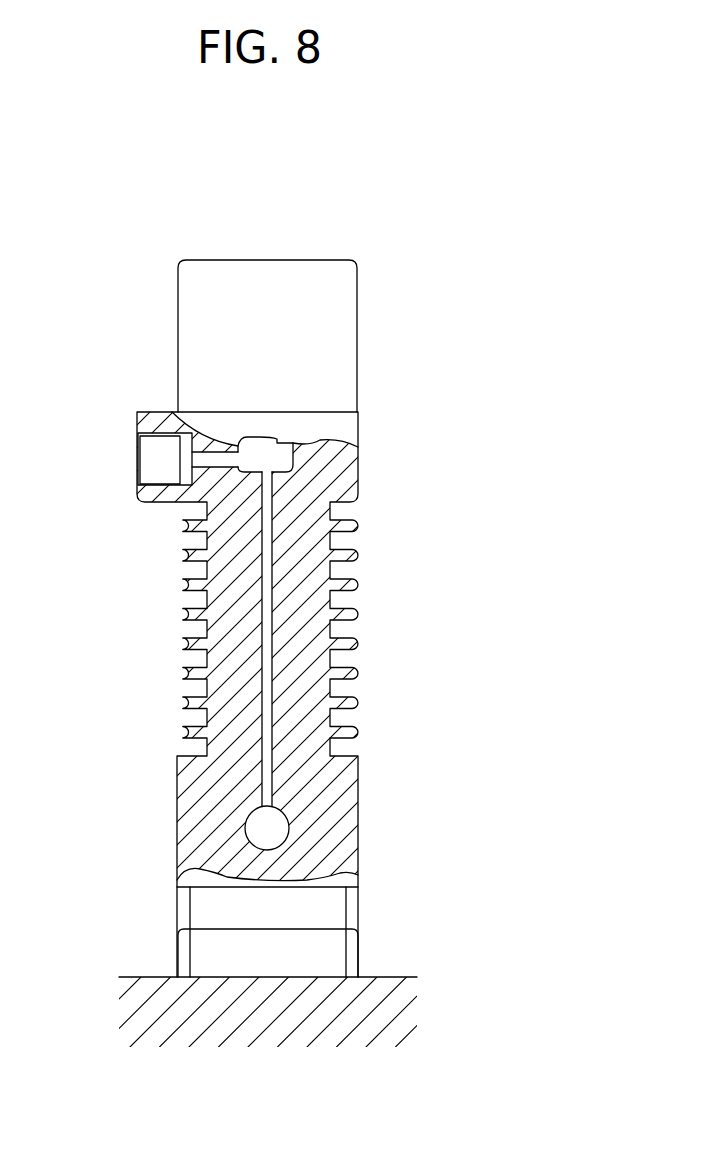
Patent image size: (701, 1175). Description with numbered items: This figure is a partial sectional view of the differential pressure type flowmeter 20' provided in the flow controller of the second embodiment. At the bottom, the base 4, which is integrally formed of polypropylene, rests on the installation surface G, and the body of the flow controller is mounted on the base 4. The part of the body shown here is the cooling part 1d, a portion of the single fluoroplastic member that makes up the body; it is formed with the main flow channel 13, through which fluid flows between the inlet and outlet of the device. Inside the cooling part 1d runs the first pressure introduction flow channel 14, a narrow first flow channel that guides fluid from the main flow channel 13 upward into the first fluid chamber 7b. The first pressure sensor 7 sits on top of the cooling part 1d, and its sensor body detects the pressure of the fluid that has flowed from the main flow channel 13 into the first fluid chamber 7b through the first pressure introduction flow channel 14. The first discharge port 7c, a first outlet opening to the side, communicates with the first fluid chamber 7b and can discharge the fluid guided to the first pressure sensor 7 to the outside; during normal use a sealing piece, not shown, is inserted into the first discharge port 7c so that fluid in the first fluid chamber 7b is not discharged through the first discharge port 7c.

The first pressure sensor 7 is at (317, 287).
The differential pressure type flowmeter 20' is at (350, 592).
The first discharge port 7c is at (150, 455).
The first fluid chamber 7b is at (282, 460).
The cooling part 1d is at (415, 648).
The first pressure introduction flow channel 14 is at (260, 683).
The main flow channel 13 is at (255, 828).
The base 4 is at (210, 952).
The installation surface G is at (269, 1012).